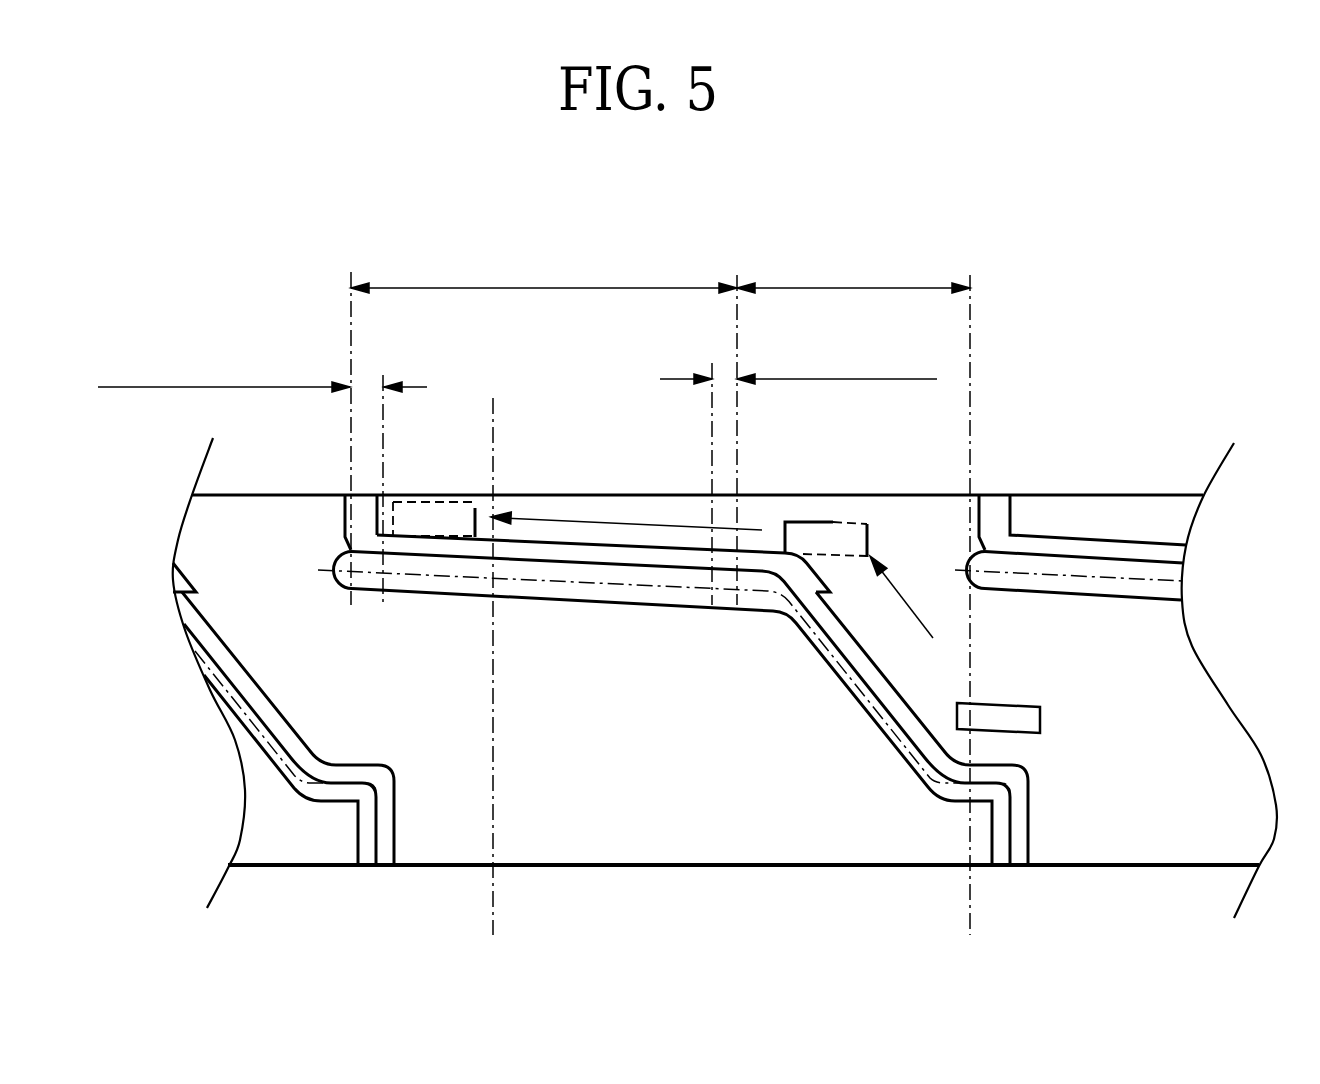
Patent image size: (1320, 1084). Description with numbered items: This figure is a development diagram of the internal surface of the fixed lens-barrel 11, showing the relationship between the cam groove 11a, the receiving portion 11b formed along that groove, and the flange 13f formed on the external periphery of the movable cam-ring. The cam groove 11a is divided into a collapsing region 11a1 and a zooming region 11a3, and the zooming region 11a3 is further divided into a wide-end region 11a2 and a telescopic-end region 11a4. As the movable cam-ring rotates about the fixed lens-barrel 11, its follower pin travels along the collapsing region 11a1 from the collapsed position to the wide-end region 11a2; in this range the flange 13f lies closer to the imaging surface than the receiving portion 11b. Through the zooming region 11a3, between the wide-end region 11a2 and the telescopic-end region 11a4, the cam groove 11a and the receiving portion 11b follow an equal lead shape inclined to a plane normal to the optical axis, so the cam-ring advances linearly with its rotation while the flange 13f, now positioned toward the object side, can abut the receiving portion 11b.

The fixed lens-barrel 11 is at (797, 853).
The cam groove 11a is at (623, 595).
The collapsing region 11a1 is at (863, 232).
The wide-end region 11a2 is at (837, 370).
The zooming region 11a3 is at (488, 228).
The telescopic-end region 11a4 is at (152, 297).
The receiving portion 11b is at (805, 577).
The flange 13f is at (1045, 716).